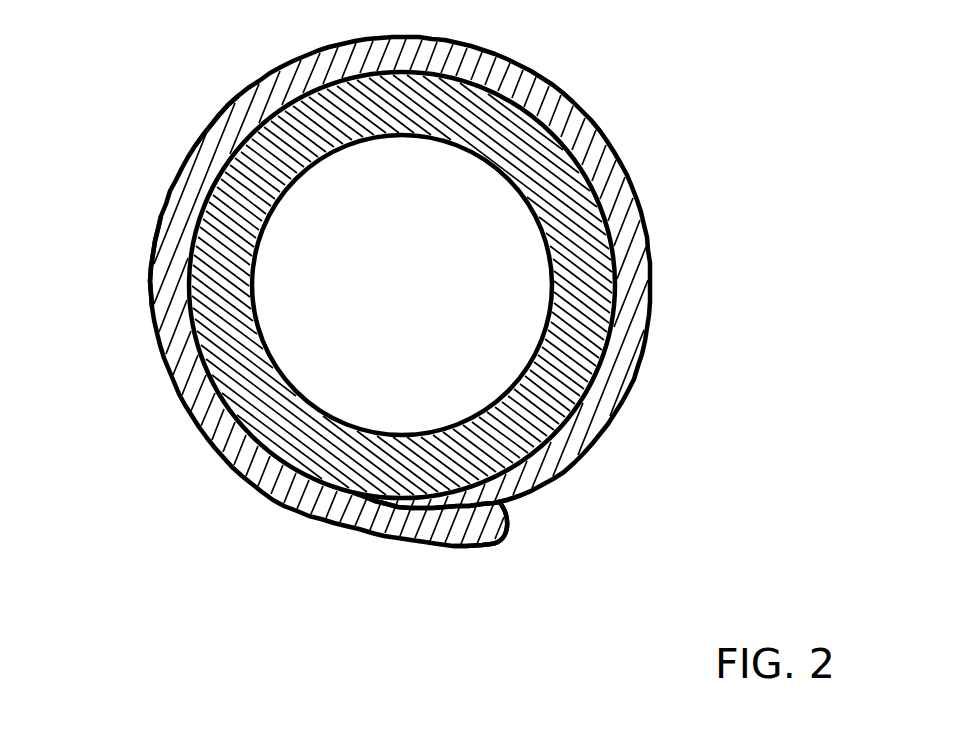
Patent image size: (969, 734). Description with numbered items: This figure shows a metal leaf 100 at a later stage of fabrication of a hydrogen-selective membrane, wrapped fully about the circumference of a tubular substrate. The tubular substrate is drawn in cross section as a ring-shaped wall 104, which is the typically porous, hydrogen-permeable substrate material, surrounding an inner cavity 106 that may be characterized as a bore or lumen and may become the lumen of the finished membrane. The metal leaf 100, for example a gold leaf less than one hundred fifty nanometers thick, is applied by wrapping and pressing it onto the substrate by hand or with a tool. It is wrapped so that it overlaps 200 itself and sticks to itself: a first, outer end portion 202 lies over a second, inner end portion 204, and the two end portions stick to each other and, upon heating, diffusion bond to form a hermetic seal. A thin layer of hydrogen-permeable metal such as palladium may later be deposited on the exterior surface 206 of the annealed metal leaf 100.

The metal leaf 100 is at (215, 147).
The wall 104 is at (557, 190).
The inner cavity 106 is at (343, 292).
The overlap 200 is at (478, 572).
The first (outer) end portion 202 is at (448, 532).
The second (inner) end portion 204 is at (512, 516).
The exterior surface 206 is at (155, 243).